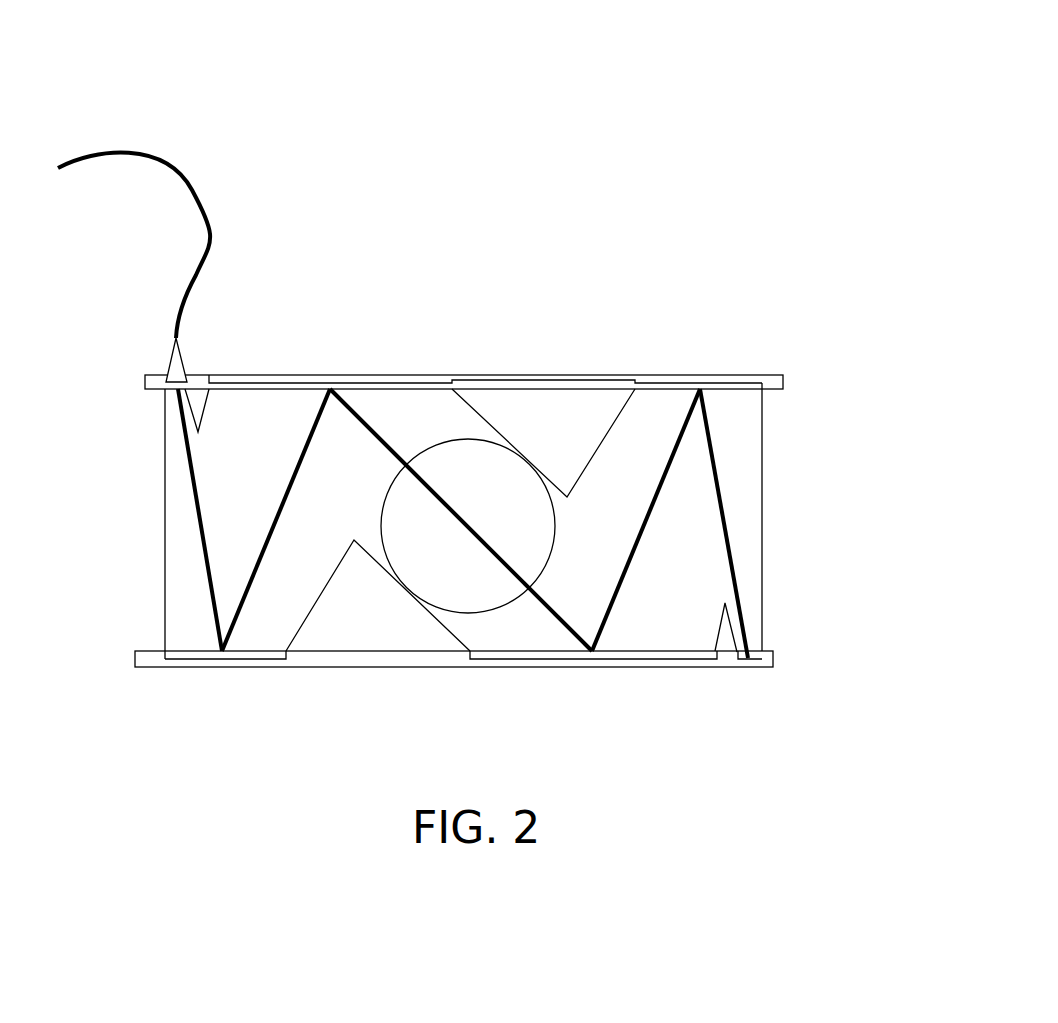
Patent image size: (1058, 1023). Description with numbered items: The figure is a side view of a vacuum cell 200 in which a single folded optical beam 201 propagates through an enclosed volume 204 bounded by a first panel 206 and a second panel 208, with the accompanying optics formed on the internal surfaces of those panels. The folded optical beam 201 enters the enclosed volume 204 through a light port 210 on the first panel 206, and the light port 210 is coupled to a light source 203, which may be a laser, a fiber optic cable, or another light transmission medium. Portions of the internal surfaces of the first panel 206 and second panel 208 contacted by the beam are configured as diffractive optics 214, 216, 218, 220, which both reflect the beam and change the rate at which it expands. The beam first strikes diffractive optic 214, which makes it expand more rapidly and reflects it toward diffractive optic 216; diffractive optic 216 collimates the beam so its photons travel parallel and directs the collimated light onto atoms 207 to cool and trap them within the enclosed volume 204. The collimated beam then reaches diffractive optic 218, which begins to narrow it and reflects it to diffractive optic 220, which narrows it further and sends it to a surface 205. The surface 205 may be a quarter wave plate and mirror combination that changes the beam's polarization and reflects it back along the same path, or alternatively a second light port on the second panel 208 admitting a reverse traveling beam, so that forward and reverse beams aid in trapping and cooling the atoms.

The vacuum cell 200 is at (577, 108).
The folded optical beam 201 is at (190, 484).
The light source 203 is at (205, 262).
The enclosed volume 204 is at (574, 418).
The surface 205 is at (747, 660).
The first panel 206 is at (783, 381).
The atoms 207 is at (437, 584).
The second panel 208 is at (773, 658).
The light port 210 is at (167, 362).
The diffractive optic 214 is at (222, 660).
The diffractive optic 216 is at (333, 388).
The diffractive optic 218 is at (592, 660).
The diffractive optic 220 is at (694, 388).